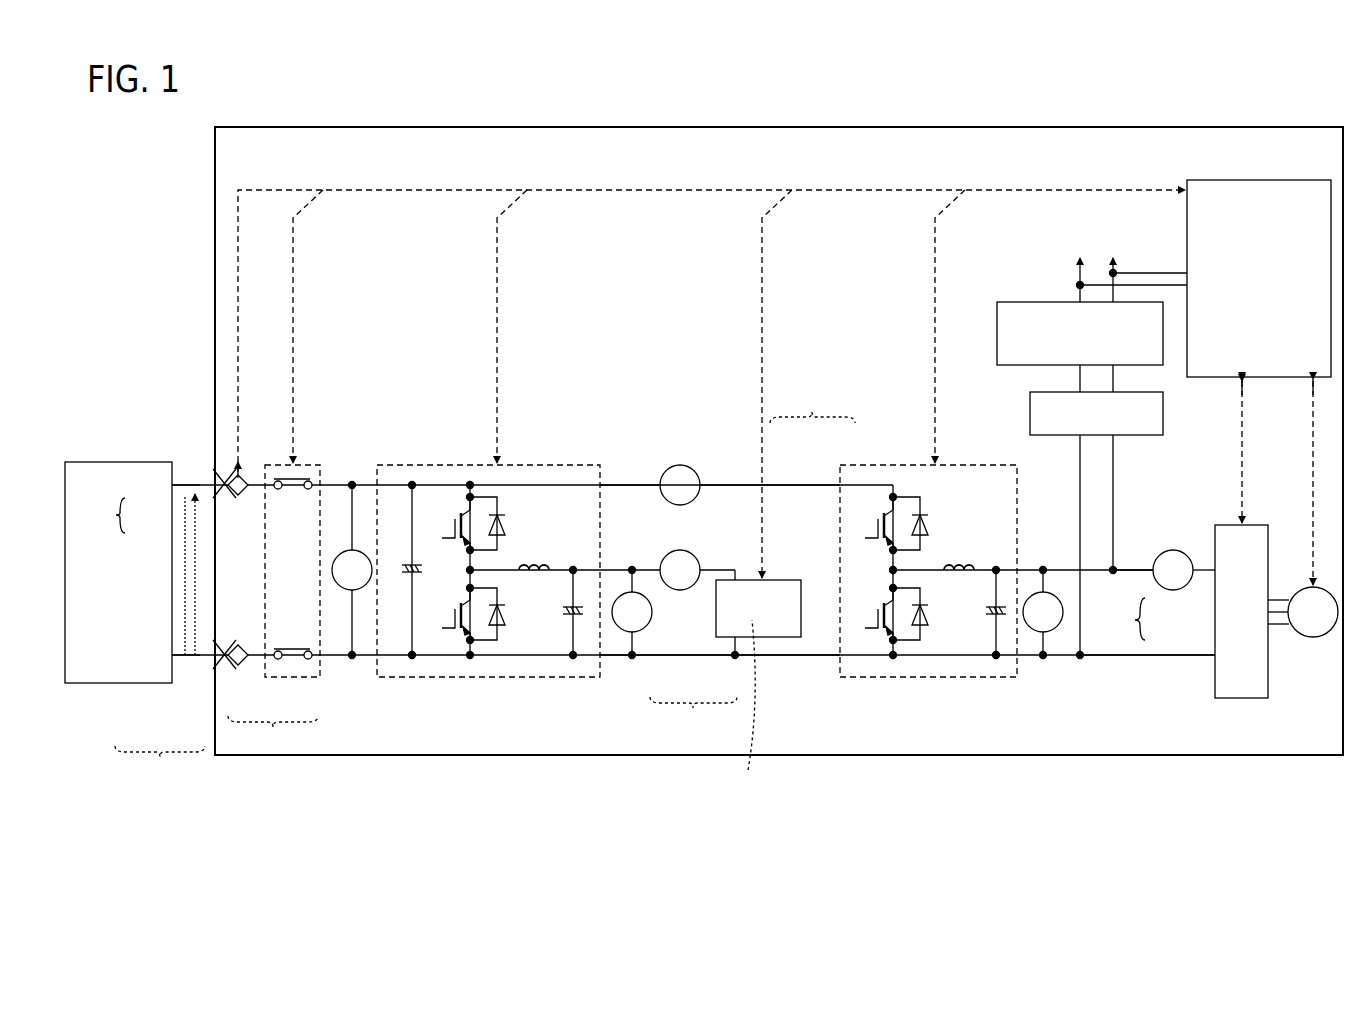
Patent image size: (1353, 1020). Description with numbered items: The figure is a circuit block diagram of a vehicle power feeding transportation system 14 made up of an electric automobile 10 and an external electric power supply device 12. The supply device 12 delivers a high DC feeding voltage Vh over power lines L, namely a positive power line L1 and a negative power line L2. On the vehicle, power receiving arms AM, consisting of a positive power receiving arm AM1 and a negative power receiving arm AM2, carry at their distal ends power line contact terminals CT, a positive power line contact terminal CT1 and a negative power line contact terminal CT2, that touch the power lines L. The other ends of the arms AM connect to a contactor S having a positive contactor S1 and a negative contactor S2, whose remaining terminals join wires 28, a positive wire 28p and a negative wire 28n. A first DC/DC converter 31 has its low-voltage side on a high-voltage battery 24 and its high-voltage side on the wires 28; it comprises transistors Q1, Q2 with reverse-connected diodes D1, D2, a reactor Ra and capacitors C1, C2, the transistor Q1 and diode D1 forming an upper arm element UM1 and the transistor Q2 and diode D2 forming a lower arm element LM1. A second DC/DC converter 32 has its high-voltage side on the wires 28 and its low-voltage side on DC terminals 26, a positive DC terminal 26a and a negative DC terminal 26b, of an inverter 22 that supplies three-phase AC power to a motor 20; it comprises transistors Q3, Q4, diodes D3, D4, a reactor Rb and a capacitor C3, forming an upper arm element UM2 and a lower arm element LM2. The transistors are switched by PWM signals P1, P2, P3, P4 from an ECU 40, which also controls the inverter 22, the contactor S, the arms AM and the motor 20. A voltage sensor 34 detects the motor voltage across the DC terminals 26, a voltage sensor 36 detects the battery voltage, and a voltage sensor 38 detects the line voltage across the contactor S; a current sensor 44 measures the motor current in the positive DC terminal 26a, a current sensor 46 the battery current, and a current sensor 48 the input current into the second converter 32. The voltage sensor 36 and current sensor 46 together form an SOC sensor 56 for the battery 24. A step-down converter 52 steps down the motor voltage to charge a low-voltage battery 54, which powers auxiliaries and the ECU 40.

The electric automobile 10 is at (870, 757).
The external electric power supply device 12 is at (106, 462).
The vehicle power feeding transportation system 14 is at (366, 114).
The motor 20 is at (1313, 638).
The inverter 22 is at (1243, 699).
The high-voltage battery 24 is at (792, 640).
The DC terminals 26 is at (1126, 619).
The positive DC terminal 26a is at (1213, 573).
The negative DC terminal 26b is at (1213, 652).
The wires 28 is at (812, 403).
The positive wire 28p is at (790, 484).
The negative wire 28n is at (830, 654).
The first DC/DC converter 31 is at (488, 594).
The second DC/DC converter 32 is at (928, 594).
The voltage sensor 34 is at (1053, 628).
The voltage sensor 36 is at (645, 628).
The voltage sensor 38 is at (356, 592).
The ECU 40 is at (1240, 180).
The current sensor 44 is at (1173, 550).
The current sensor 46 is at (679, 592).
The current sensor 48 is at (680, 465).
The step-down converter 52 is at (1030, 420).
The low-voltage battery 54 is at (1010, 302).
The SOC sensor 56 is at (693, 717).
The contactor S is at (312, 461).
The positive contactor S1 is at (283, 490).
The negative contactor S2 is at (283, 649).
The power line contact terminals CT is at (160, 764).
The positive power line contact terminal CT1 is at (222, 500).
The negative power line contact terminal CT2 is at (220, 668).
The power receiving arms AM is at (273, 733).
The positive power receiving arm AM1 is at (240, 500).
The negative power receiving arm AM2 is at (240, 668).
The power lines L is at (108, 515).
The positive power line L1 is at (177, 489).
The negative power line L2 is at (183, 650).
The feeding voltage Vh is at (198, 574).
The capacitor C1 is at (409, 564).
The capacitor C2 is at (569, 618).
The capacitor C3 is at (992, 618).
The transistor Q1 is at (454, 520).
The transistor Q2 is at (454, 609).
The transistor Q3 is at (877, 520).
The transistor Q4 is at (877, 609).
The diode D1 is at (503, 523).
The diode D2 is at (503, 614).
The diode D3 is at (926, 523).
The diode D4 is at (926, 614).
The PWM signal P1 is at (440, 549).
The PWM signal P2 is at (440, 641).
The PWM signal P3 is at (863, 549).
The PWM signal P4 is at (863, 641).
The upper arm element UM1 is at (505, 507).
The upper arm element UM2 is at (928, 507).
The lower arm element LM1 is at (505, 599).
The lower arm element LM2 is at (928, 599).
The reactor Ra is at (540, 566).
The reactor Rb is at (965, 566).